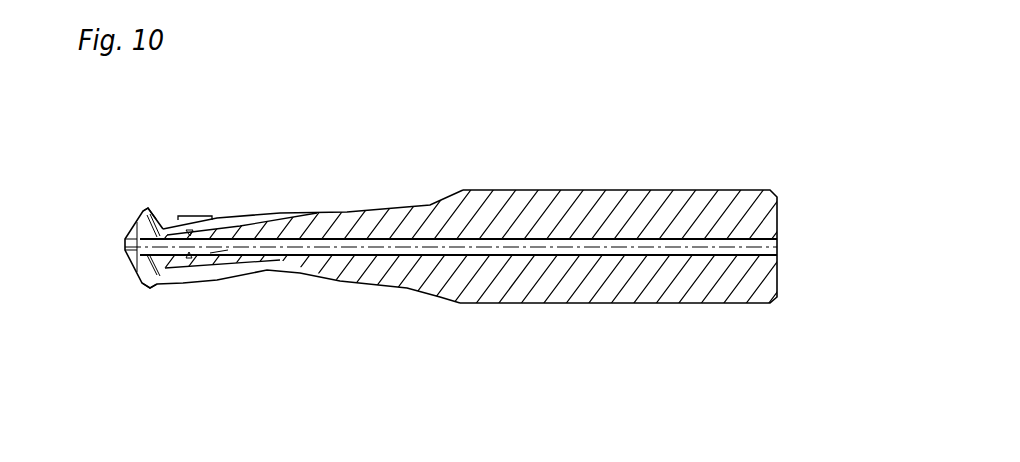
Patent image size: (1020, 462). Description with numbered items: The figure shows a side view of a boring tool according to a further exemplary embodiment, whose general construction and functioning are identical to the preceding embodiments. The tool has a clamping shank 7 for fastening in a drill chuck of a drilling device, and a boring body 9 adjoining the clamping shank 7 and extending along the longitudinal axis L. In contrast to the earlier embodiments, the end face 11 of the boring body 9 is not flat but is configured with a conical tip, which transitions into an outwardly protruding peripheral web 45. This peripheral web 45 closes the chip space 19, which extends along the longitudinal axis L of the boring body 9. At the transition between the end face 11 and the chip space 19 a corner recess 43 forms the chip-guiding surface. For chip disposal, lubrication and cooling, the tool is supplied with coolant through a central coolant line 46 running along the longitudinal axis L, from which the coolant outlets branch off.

The clamping shank 7 is at (667, 190).
The boring body 9 is at (347, 212).
The end face 11 is at (138, 222).
The chip space 19 is at (197, 214).
The corner recess 43 is at (152, 289).
The peripheral web 45 is at (146, 212).
The central coolant line 46 is at (543, 257).
The longitudinal axis L is at (733, 248).